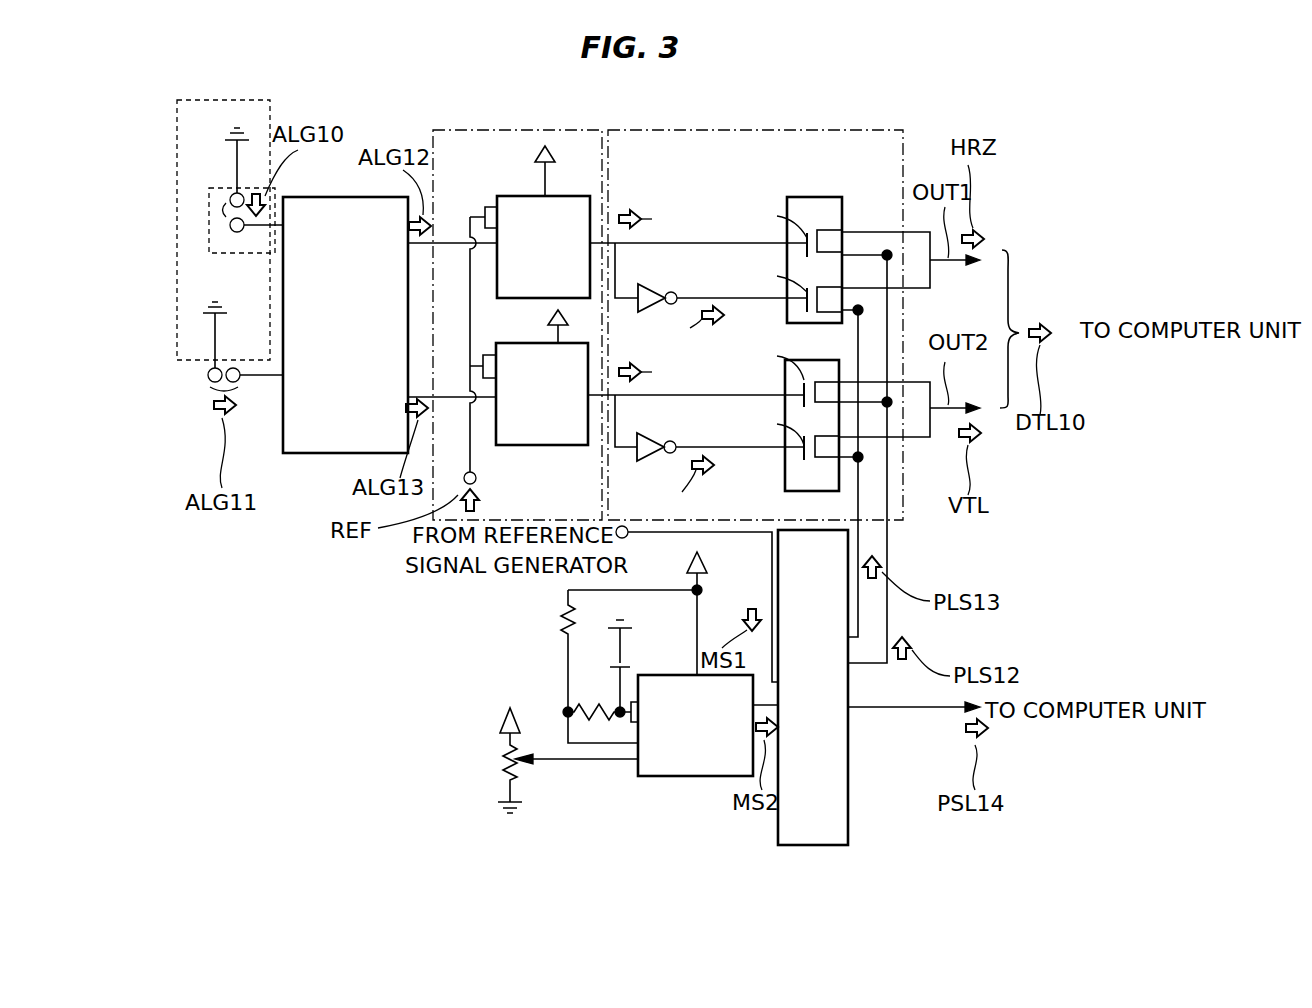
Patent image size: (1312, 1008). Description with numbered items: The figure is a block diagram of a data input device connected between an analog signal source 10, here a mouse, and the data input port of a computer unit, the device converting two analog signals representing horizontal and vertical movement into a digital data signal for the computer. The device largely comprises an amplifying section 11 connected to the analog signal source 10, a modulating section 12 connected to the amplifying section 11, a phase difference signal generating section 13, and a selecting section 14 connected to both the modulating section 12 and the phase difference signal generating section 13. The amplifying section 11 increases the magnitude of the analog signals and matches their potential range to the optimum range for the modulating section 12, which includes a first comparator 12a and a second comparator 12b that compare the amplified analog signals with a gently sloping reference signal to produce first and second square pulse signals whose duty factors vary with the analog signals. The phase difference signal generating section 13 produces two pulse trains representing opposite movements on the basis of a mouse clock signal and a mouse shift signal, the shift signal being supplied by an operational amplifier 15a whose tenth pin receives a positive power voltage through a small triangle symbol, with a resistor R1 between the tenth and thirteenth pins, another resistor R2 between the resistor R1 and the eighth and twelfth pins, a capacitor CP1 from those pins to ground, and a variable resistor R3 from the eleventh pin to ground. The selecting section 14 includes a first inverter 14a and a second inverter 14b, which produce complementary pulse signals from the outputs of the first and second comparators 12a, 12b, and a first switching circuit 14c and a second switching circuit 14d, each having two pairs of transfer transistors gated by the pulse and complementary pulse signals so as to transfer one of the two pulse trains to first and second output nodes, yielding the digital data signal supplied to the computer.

The analog signal source 10 is at (203, 100).
The amplifying section 11 is at (353, 197).
The modulating section 12 is at (523, 130).
The first comparator 12a is at (530, 196).
The second comparator 12b is at (560, 445).
The phase difference signal generating section 13 is at (815, 845).
The selecting section 14 is at (838, 130).
The first inverter 14a is at (654, 291).
The second inverter 14b is at (650, 441).
The first switching circuit 14c is at (800, 197).
The second switching circuit 14d is at (785, 488).
The operational amplifier 15a is at (676, 777).
The resistor R1 is at (560, 616).
The resistor R2 is at (592, 705).
The variable resistor R3 is at (500, 752).
The capacitor CP1 is at (632, 660).